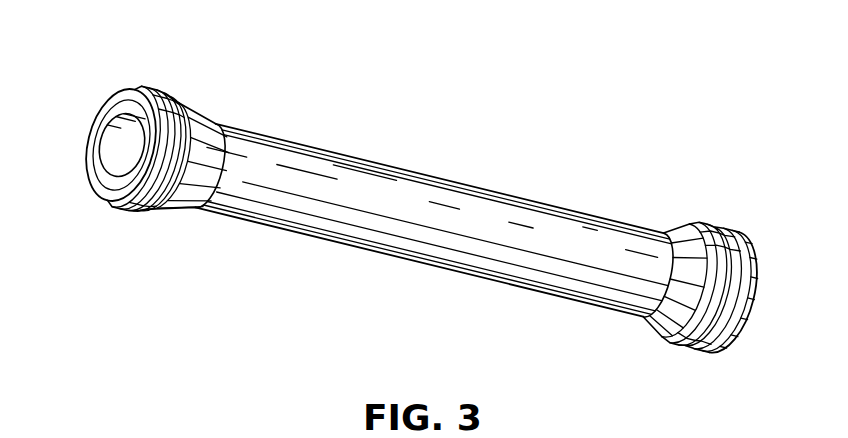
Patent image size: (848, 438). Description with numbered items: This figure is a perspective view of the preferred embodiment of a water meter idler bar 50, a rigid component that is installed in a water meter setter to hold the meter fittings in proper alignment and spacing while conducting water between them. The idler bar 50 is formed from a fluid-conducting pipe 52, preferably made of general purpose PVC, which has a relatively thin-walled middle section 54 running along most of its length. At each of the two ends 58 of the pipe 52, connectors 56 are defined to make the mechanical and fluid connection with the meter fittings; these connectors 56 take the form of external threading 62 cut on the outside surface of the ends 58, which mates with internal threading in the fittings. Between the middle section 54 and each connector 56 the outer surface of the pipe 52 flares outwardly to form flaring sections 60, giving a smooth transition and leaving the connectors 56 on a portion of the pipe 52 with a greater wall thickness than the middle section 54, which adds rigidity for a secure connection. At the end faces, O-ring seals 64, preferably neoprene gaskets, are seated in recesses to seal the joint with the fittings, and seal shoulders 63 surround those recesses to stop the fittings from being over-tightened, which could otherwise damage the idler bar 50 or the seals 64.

The water meter idler bar 50 is at (574, 102).
The fluid-conducting pipe 52 is at (562, 237).
The middle section 54 is at (437, 173).
The connectors 56 is at (167, 83).
The ends 58 is at (80, 135).
The flaring sections 60 is at (201, 107).
The external threading 62 is at (150, 90).
The seal shoulders 63 is at (147, 183).
The O-ring seals 64 is at (105, 115).